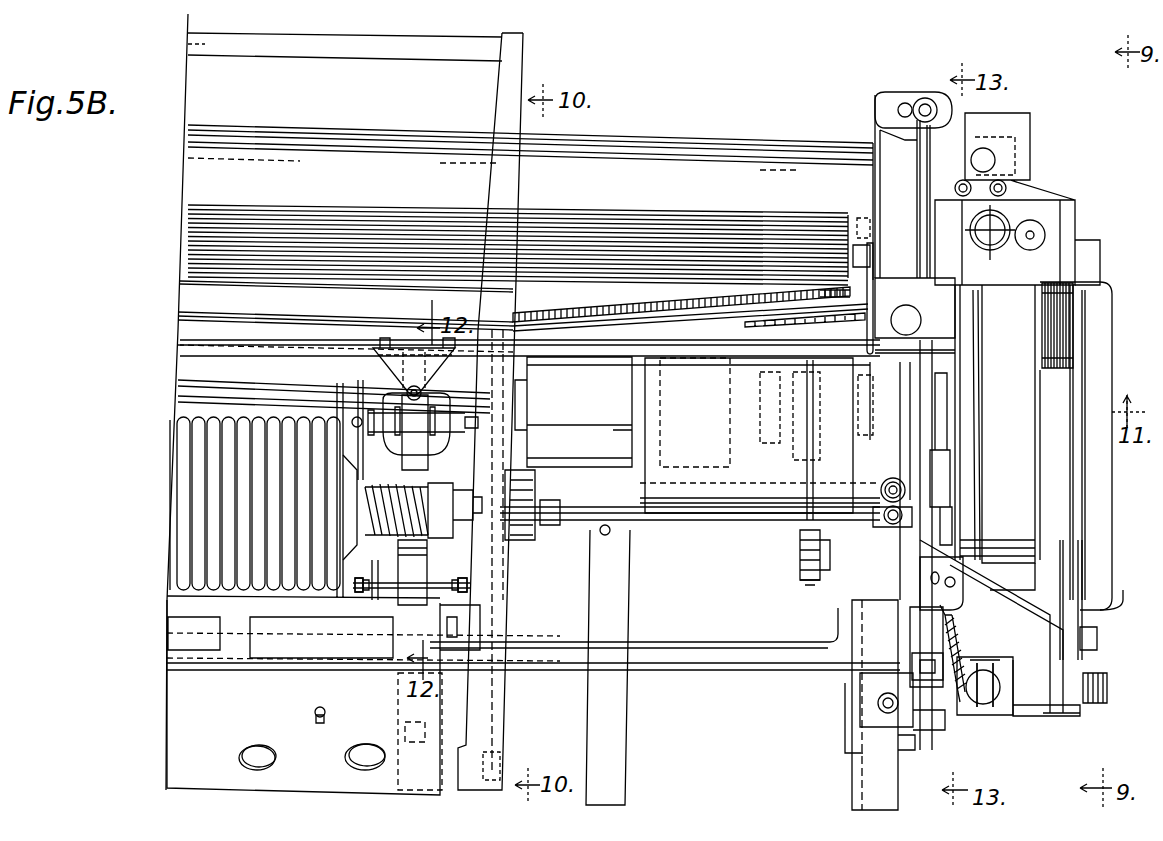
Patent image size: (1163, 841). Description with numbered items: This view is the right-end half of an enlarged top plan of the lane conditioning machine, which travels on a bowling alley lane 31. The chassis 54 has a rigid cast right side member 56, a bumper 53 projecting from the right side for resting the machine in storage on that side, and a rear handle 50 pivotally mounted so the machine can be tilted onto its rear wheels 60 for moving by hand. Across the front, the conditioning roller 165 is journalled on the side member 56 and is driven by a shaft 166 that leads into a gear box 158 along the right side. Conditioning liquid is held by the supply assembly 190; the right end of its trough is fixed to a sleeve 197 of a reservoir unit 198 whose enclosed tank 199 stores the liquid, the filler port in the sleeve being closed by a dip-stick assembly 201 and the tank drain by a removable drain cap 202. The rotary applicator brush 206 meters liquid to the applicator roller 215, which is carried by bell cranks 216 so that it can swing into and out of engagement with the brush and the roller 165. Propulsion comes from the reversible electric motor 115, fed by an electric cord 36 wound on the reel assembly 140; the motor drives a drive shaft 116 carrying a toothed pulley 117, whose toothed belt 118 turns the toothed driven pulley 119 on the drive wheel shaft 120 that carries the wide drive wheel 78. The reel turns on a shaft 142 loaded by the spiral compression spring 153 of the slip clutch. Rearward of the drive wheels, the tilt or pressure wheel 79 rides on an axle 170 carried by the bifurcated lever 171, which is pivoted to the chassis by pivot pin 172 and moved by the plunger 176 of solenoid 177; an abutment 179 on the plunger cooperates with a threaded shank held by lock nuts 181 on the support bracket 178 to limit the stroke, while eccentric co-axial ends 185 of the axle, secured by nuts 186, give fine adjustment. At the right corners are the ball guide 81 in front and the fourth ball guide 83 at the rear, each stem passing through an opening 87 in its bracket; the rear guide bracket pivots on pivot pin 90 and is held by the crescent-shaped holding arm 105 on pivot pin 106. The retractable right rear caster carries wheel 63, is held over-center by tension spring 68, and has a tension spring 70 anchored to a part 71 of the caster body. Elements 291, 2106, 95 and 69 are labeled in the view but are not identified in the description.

The rear handle 50 is at (505, 108).
The conditioning roller 165 is at (638, 132).
The applicator roller 215 is at (276, 218).
The rotary metering roll or applicator brush 206 is at (295, 305).
The guide rail 291 is at (190, 326).
The rack 2106 is at (775, 308).
The bell cranks 216 is at (868, 303).
The drive wheel shaft 120 is at (192, 398).
The reel assembly 140 is at (189, 480).
The electric cord 36 is at (204, 540).
The support bracket 178 is at (400, 355).
The lock nuts 181 is at (422, 380).
The solenoid 177 is at (380, 401).
The plunger 176 is at (359, 410).
The abutment 179 is at (410, 455).
The spiral compression spring 153 is at (412, 500).
The drive wheel 78 is at (582, 398).
The reversible electric motor 115 is at (700, 396).
The toothed driven pulley 119 is at (800, 430).
The toothed belt 118 is at (880, 482).
The shaft 142 is at (585, 520).
The toothed pulley 117 is at (800, 557).
The drive shaft 116 is at (893, 525).
The gear box 158 is at (910, 413).
The bifurcated lever 171 is at (370, 555).
The tilt or pressure wheel 79 is at (411, 587).
The pivot pin 172 is at (448, 620).
The axle 170 is at (378, 588).
The co-axial ends 185 is at (360, 585).
The nuts 186 is at (367, 590).
The rear wheels 60 is at (398, 778).
The bowling alley lane 31 is at (745, 650).
The rail 95 is at (650, 672).
The ball guide 81 is at (888, 95).
The opening 87 is at (915, 100).
The shaft 166 is at (875, 230).
The wheel 69 is at (972, 230).
The supply assembly 190 is at (1035, 282).
The sleeve 197 is at (925, 303).
The dip-stick assembly 201 is at (912, 320).
The reservoir unit 198 is at (1030, 357).
The tank 199 is at (1025, 405).
The drain cap 202 is at (1074, 302).
The right side member 56 is at (1097, 342).
The bumper 53 is at (1118, 600).
The wheel 63 is at (1114, 691).
The chassis 54 is at (1104, 716).
The ball guide 83 is at (931, 644).
The tension spring 68 is at (955, 642).
The tension spring 70 is at (962, 698).
The part 71 is at (988, 705).
The pivot pin 106 is at (950, 738).
The holding arm 105 is at (905, 750).
The pivot pin 90 is at (930, 712).